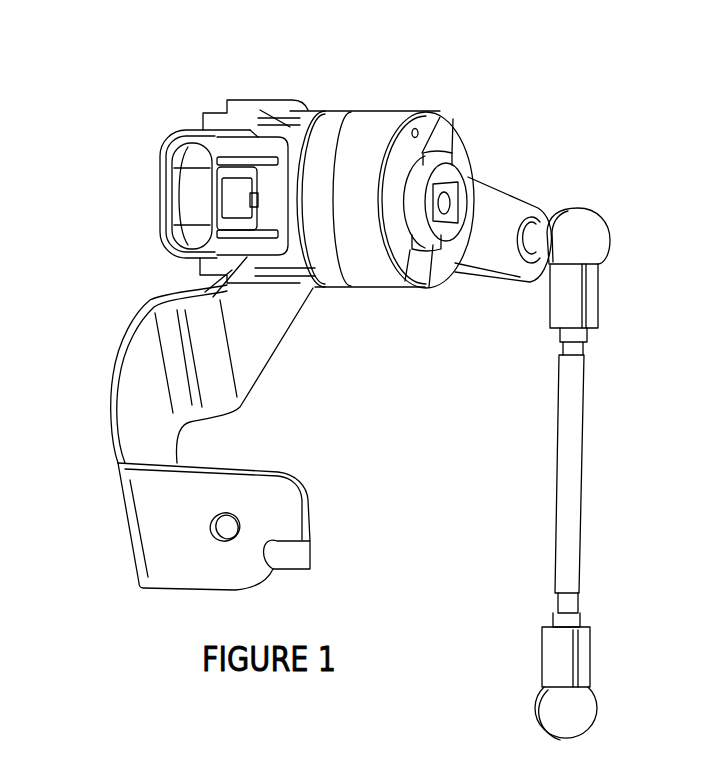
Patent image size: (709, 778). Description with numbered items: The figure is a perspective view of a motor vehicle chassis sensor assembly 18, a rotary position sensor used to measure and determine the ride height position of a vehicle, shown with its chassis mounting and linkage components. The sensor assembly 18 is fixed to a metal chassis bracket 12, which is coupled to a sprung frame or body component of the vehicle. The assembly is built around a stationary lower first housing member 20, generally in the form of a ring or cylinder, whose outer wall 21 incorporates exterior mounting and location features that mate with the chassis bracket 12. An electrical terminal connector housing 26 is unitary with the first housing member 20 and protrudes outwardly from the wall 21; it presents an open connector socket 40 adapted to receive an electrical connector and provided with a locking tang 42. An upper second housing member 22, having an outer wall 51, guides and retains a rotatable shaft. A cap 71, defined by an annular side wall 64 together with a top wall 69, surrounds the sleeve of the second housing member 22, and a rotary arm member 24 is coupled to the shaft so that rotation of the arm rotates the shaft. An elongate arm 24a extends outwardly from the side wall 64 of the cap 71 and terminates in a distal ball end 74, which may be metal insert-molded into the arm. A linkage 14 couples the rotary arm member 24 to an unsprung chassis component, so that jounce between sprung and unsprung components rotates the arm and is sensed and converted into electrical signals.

The chassis bracket 12 is at (133, 383).
The linkage 14 is at (582, 455).
The motor vehicle chassis sensor assembly 18 is at (399, 105).
The first housing member 20 is at (306, 102).
The outer wall 21 is at (292, 133).
The second housing member 22 is at (355, 109).
The rotary arm member 24 is at (497, 205).
The elongate arm 24a is at (532, 235).
The electrical terminal connector housing 26 is at (189, 127).
The connector socket 40 is at (185, 193).
The tang 42 is at (232, 201).
The outer wall 51 is at (326, 258).
The side wall 64 is at (390, 122).
The top wall 69 is at (447, 262).
The cap 71 is at (487, 181).
The ball end 74 is at (548, 220).